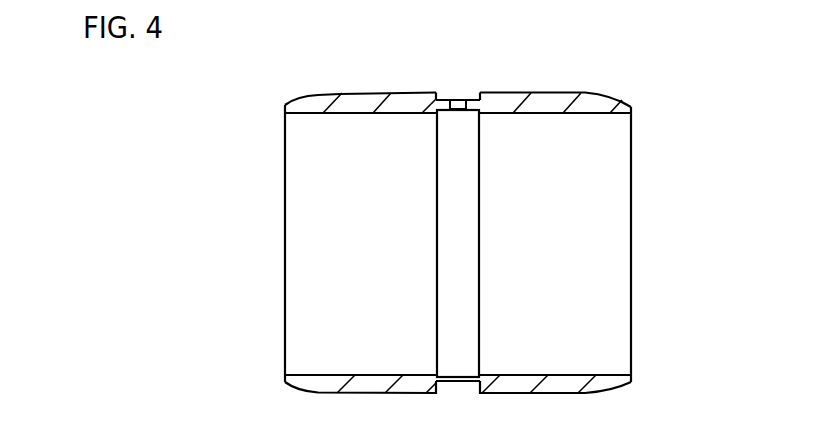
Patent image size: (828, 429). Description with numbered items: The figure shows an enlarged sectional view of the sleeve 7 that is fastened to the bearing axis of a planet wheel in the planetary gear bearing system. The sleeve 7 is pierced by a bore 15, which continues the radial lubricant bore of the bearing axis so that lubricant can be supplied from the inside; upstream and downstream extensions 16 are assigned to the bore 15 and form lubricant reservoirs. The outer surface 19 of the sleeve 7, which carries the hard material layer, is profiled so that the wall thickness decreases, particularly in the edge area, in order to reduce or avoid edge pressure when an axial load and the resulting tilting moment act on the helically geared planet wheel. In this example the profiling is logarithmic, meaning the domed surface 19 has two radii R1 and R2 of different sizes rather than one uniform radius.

The sleeve 7 is at (580, 117).
The bore 15 is at (458, 104).
The extensions 16 is at (471, 108).
The surface 19 is at (558, 88).
The radius R1 is at (408, 43).
The radius R2 is at (320, 47).